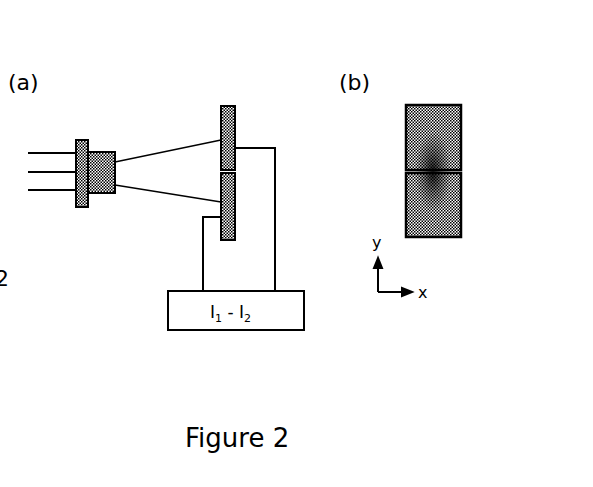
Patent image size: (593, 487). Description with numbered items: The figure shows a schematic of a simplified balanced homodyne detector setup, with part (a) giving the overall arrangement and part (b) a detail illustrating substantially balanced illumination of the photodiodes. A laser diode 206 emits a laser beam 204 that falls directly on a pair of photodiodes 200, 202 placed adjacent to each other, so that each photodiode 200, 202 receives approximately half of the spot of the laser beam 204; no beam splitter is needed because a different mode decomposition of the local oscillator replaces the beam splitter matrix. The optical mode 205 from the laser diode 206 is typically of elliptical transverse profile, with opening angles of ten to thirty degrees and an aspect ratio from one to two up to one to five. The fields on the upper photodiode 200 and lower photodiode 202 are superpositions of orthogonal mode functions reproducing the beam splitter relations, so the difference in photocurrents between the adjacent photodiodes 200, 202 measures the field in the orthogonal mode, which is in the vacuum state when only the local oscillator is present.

The photodiode 200 is at (240, 128).
The photodiode 202 is at (219, 208).
The laser beam 204 is at (154, 148).
The optical mode 205 is at (430, 105).
The laser diode 206 is at (100, 196).